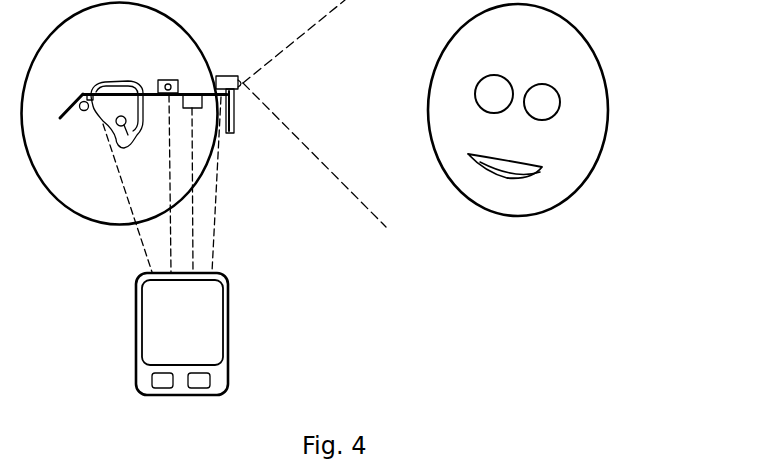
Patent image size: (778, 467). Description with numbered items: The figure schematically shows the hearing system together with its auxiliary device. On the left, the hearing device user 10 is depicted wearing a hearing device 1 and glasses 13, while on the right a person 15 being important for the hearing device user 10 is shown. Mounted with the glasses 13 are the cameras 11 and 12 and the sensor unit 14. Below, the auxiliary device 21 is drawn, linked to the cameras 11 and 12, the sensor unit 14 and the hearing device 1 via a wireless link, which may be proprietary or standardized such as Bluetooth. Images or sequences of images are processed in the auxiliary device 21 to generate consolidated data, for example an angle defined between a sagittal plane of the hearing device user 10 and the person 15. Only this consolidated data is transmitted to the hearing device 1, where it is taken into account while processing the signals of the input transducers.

The hearing device 1 is at (101, 80).
The hearing device user 10 is at (182, 17).
The camera 11 is at (229, 75).
The camera 12 is at (163, 79).
The glasses 13 is at (236, 125).
The sensor unit 14 is at (189, 110).
The person being important for the hearing device user 15 is at (594, 40).
The auxiliary device 21 is at (234, 333).